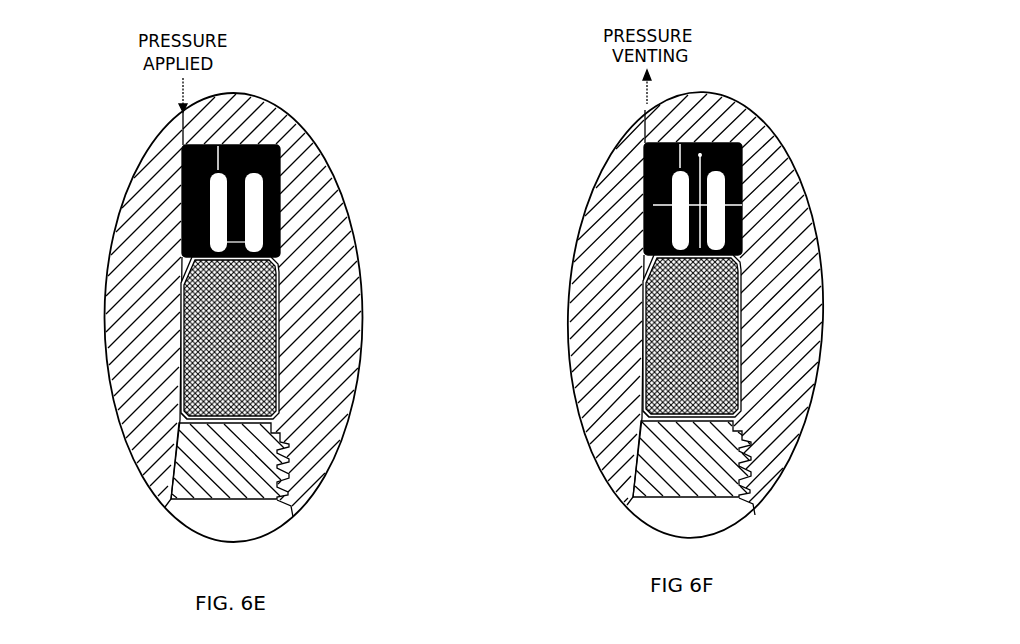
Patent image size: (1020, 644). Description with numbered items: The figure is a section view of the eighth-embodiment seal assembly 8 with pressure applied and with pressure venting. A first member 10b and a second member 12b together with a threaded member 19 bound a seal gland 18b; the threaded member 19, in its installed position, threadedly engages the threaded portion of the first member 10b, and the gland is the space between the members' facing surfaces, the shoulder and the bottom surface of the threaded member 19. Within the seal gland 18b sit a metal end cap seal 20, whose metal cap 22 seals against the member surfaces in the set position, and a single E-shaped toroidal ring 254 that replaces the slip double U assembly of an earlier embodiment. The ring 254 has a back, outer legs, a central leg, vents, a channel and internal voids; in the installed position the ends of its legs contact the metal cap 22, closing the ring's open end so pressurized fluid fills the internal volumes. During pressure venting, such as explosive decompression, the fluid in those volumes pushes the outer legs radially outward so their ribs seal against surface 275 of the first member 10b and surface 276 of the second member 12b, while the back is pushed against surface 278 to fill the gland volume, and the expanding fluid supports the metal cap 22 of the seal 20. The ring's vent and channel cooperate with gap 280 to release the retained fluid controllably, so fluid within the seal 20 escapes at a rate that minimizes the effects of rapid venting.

In FIG. 6E, the seal assembly 8 is at (375, 57).
In FIG. 6F, the seal assembly 8 is at (850, 77).
In FIG. 6E, the first member 10b is at (343, 333).
In FIG. 6F, the first member 10b is at (813, 297).
In FIG. 6E, the second member 12b is at (127, 332).
In FIG. 6F, the second member 12b is at (583, 297).
In FIG. 6E, the seal gland 18b is at (177, 415).
In FIG. 6F, the seal gland 18b is at (641, 411).
In FIG. 6E, the threaded member 19 is at (197, 487).
In FIG. 6F, the threaded member 19 is at (653, 470).
In FIG. 6E, the metal end cap seal 20 is at (270, 305).
In FIG. 6F, the metal end cap seal 20 is at (737, 290).
In FIG. 6E, the metal cap 22 is at (278, 264).
In FIG. 6F, the metal cap 22 is at (738, 267).
In FIG. 6E, the E-shaped toroidal ring 254 is at (280, 160).
In FIG. 6F, the E-shaped toroidal ring 254 is at (647, 160).
In FIG. 6F, the surface 275 is at (742, 207).
In FIG. 6F, the surface 276 is at (643, 223).
In FIG. 6F, the surface 278 is at (700, 140).
In FIG. 6F, the gap 280 is at (647, 137).